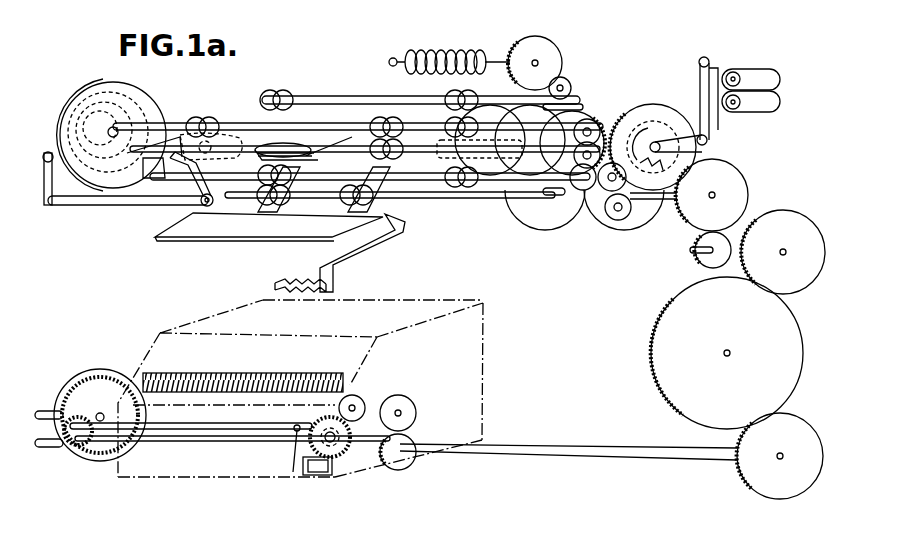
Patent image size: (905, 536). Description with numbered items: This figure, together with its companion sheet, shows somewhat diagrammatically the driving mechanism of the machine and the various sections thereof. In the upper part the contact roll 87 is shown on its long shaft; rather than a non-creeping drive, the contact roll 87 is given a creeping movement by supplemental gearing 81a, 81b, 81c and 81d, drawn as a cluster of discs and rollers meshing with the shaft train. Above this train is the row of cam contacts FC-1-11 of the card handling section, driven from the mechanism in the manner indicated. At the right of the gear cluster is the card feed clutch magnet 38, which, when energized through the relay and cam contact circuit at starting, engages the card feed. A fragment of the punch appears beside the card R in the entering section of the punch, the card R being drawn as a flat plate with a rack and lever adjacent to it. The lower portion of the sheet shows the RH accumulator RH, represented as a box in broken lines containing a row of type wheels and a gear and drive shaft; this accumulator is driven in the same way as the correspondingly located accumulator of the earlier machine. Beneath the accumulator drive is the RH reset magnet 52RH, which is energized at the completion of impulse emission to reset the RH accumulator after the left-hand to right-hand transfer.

The contact roll 87 is at (259, 110).
The cam contacts FC-1-11 is at (486, 54).
The supplemental gearing 81d is at (497, 118).
The supplemental gearing 81a is at (582, 127).
The card feed clutch magnet 38 is at (752, 100).
The supplemental gearing 81c is at (548, 218).
The supplemental gearing 81b is at (622, 226).
The card R is at (269, 227).
The RH accumulator RH is at (300, 388).
The RH reset magnet 52RH is at (322, 466).